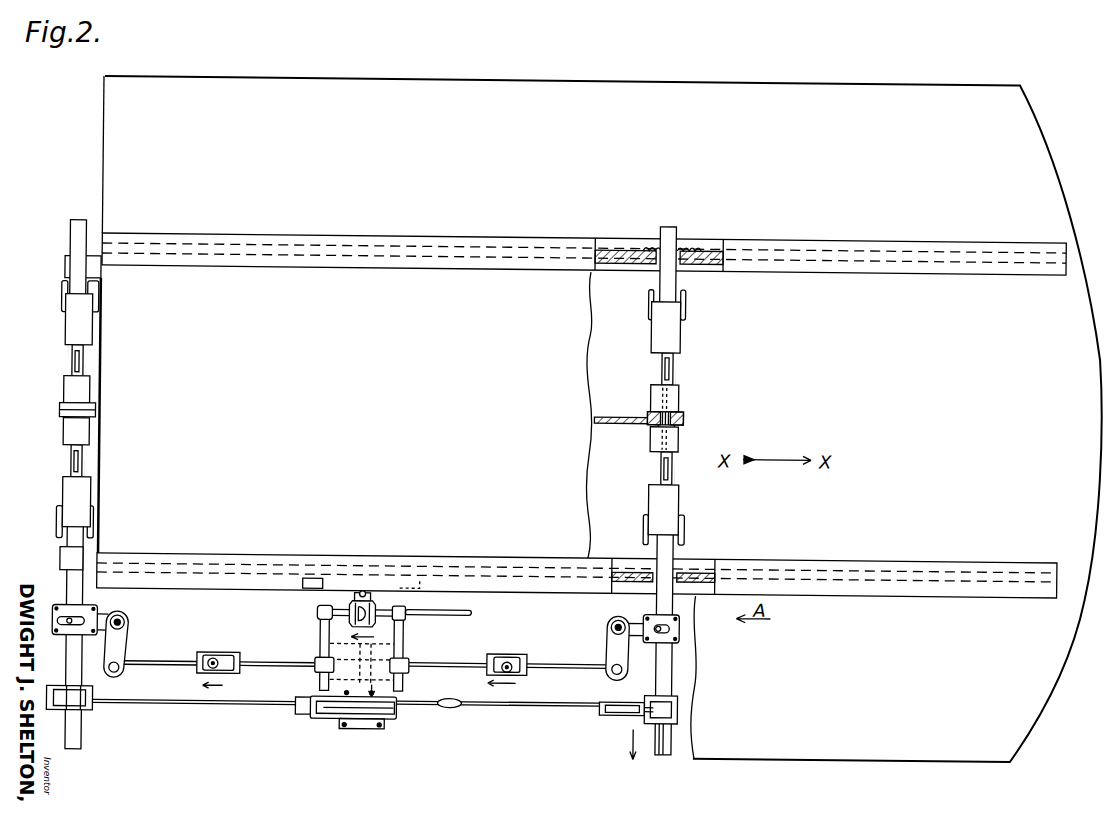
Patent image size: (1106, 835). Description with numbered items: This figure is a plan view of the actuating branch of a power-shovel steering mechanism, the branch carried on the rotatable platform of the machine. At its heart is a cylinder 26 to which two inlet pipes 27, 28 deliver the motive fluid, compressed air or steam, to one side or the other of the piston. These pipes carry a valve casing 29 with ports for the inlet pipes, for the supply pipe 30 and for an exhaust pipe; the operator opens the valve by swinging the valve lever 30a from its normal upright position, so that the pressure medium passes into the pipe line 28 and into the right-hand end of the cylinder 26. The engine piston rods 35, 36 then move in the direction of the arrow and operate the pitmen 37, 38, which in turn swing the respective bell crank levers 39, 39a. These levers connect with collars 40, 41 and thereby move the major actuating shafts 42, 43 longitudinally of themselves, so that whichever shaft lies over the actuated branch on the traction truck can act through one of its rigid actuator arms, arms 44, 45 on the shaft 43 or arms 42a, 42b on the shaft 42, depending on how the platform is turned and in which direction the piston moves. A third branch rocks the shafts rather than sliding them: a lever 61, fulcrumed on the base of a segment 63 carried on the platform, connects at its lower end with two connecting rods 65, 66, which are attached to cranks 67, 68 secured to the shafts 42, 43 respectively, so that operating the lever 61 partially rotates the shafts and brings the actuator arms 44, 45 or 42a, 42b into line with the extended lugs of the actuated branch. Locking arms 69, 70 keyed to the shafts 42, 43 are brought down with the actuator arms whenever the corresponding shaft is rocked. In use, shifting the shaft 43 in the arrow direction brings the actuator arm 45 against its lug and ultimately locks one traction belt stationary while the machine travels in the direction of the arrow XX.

The cylinder 26 is at (339, 628).
The inlet pipe 27 is at (328, 633).
The inlet pipe 28 is at (406, 627).
The valve casing 29 is at (382, 595).
The supply pipe 30 is at (466, 612).
The valve lever 30a is at (367, 589).
The engine piston rod 35 is at (274, 658).
The engine piston rod 36 is at (443, 657).
The pitman 37 is at (171, 657).
The pitman 38 is at (569, 652).
The bell crank lever 39 is at (125, 642).
The bell crank lever 39a is at (618, 642).
The collar 40 is at (96, 610).
The collar 41 is at (683, 616).
The major actuating shaft 42 is at (83, 580).
The actuator arm 42a is at (82, 498).
The actuator arm 42b is at (75, 322).
The major actuating shaft 43 is at (674, 660).
The actuator arm 44 is at (677, 506).
The actuator arm 45 is at (673, 331).
The lever 61 is at (459, 702).
The segment 63 is at (335, 716).
The connecting rod 65 is at (225, 704).
The connecting rod 66 is at (527, 708).
The crank 67 is at (92, 710).
The crank 68 is at (687, 711).
The locking arm 69 is at (702, 427).
The locking arm 70 is at (74, 392).